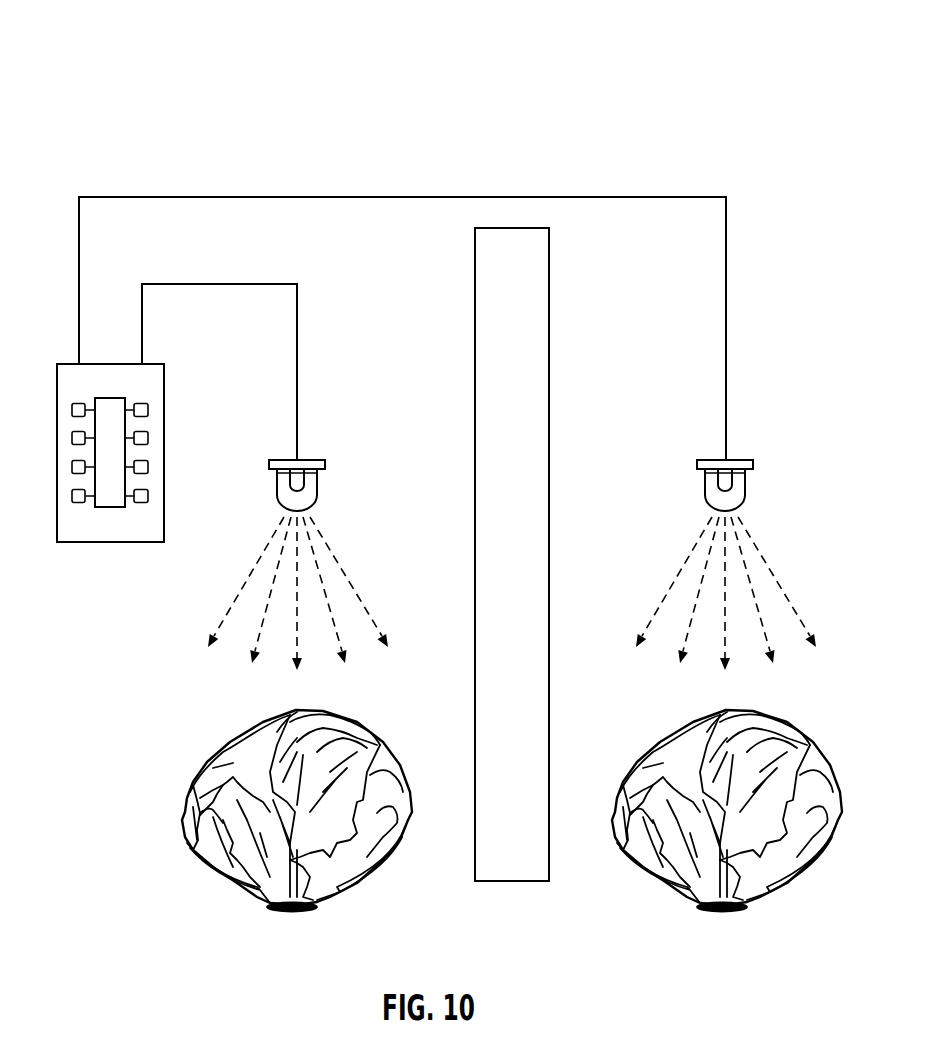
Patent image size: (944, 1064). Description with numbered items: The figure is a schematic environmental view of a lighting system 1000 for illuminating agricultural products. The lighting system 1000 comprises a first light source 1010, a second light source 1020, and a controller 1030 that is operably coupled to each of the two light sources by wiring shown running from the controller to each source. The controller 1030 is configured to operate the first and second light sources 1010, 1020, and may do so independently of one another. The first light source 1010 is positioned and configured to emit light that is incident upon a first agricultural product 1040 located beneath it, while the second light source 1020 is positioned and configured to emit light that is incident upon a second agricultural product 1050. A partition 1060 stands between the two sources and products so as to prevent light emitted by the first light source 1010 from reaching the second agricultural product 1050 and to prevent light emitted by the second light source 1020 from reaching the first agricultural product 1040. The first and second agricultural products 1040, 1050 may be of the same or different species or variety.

The lighting system 1000 is at (165, 53).
The first light source 1010 is at (313, 458).
The second light source 1020 is at (742, 458).
The controller 1030 is at (110, 545).
The first agricultural product 1040 is at (290, 712).
The second agricultural product 1050 is at (765, 712).
The partition 1060 is at (475, 556).